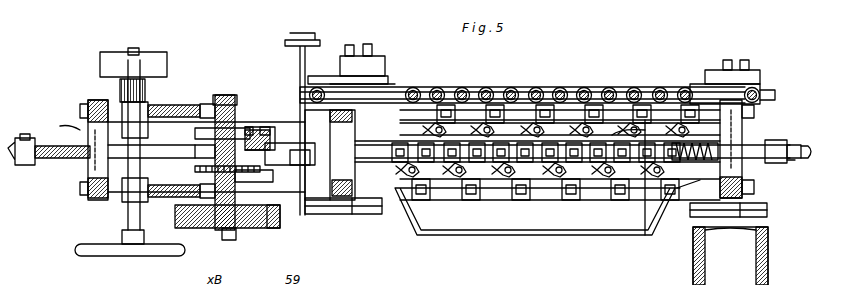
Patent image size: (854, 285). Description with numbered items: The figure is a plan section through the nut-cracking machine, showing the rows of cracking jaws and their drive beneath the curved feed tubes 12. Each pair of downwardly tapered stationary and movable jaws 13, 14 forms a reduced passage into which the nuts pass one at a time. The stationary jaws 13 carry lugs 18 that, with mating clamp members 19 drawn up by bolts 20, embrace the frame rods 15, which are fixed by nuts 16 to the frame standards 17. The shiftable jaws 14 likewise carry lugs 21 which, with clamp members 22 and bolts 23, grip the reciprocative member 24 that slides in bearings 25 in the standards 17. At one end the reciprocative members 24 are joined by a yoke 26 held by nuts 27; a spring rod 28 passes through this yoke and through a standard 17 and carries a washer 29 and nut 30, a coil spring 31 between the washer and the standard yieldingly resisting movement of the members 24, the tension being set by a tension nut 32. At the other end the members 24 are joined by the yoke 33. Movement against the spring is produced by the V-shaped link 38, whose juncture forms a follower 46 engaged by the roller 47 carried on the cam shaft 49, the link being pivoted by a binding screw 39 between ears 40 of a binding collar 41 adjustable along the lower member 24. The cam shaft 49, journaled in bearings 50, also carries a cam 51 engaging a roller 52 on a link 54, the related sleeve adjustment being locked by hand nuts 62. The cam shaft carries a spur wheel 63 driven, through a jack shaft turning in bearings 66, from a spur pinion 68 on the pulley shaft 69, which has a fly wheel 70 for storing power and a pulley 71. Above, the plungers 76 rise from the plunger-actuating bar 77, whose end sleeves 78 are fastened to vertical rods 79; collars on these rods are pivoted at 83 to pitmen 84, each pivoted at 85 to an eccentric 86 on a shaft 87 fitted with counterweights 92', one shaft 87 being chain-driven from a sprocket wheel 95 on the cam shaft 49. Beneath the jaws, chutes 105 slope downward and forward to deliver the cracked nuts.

The feed tubes 12 is at (740, 252).
The stationary jaws 13 is at (564, 202).
The movable jaws 14 is at (425, 132).
The rods 15 is at (685, 62).
The nuts 16 is at (82, 194).
The frame standards 17 is at (92, 100).
The lugs 18 is at (648, 88).
The clamp member 19 is at (560, 88).
The bolts 20 is at (596, 88).
The lugs 21 is at (622, 88).
The clamp member 22 is at (646, 236).
The bolts 23 is at (592, 160).
The reciprocative member 24 is at (760, 158).
The bearings 25 is at (770, 140).
The yoke 26 is at (794, 144).
The nuts 27 is at (811, 141).
The spring rod 28 is at (680, 200).
The washer 29 is at (638, 132).
The nut 30 is at (630, 192).
The coil spring 31 is at (700, 162).
The tension nut 32 is at (798, 163).
The yoke 33 is at (58, 158).
The V-shaped link 38 is at (293, 165).
The binding screw 39 is at (300, 52).
The ears 40 is at (286, 148).
The binding collar 41 is at (305, 163).
The follower 46 is at (195, 133).
The roller 47 is at (195, 150).
The cam shaft 49 is at (232, 238).
The bearings 50 is at (222, 95).
The cam 51 is at (249, 127).
The roller 52 is at (265, 127).
The link 54 is at (254, 127).
The hand nuts 62 is at (28, 129).
The spur wheel 63 is at (272, 218).
The bearings 66 is at (170, 104).
The spur pinion 68 is at (118, 88).
The pulley shaft 69 is at (133, 50).
The fly wheel 70 is at (128, 250).
The pulley 71 is at (148, 60).
The vertical plunger 76 is at (512, 88).
The plunger-actuating member 77 is at (452, 88).
The sleeves 78 is at (773, 72).
The vertical rods 79 is at (309, 98).
The pivot 83 is at (352, 58).
The pitman 84 is at (368, 48).
The pivot 85 is at (374, 60).
The eccentric 86 is at (388, 85).
The shafts 87 is at (338, 196).
The counterweights 92' is at (553, 219).
The sprocket wheel 95 is at (193, 168).
The chutes 105 is at (476, 235).